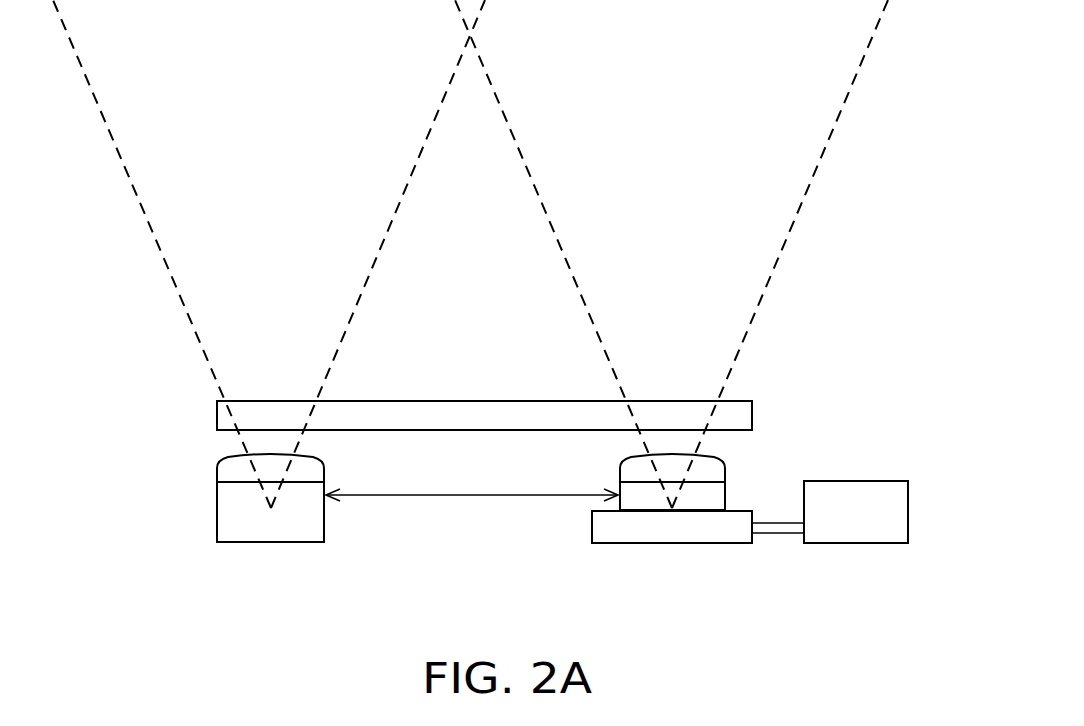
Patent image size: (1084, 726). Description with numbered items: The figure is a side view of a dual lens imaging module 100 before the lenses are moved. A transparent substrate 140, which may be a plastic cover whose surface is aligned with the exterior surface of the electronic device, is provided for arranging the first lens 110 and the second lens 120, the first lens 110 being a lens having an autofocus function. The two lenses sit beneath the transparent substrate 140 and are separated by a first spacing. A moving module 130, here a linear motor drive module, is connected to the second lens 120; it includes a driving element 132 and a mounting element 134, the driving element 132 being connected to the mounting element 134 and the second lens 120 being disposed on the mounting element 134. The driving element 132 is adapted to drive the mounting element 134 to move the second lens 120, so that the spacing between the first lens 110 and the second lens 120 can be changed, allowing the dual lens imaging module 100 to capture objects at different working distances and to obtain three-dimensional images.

The dual lens imaging module 100 is at (504, 308).
The first lens 110 is at (267, 528).
The second lens 120 is at (645, 503).
The moving module 130 is at (857, 462).
The driving element 132 is at (857, 528).
The mounting element 134 is at (700, 528).
The transparent substrate 140 is at (743, 415).